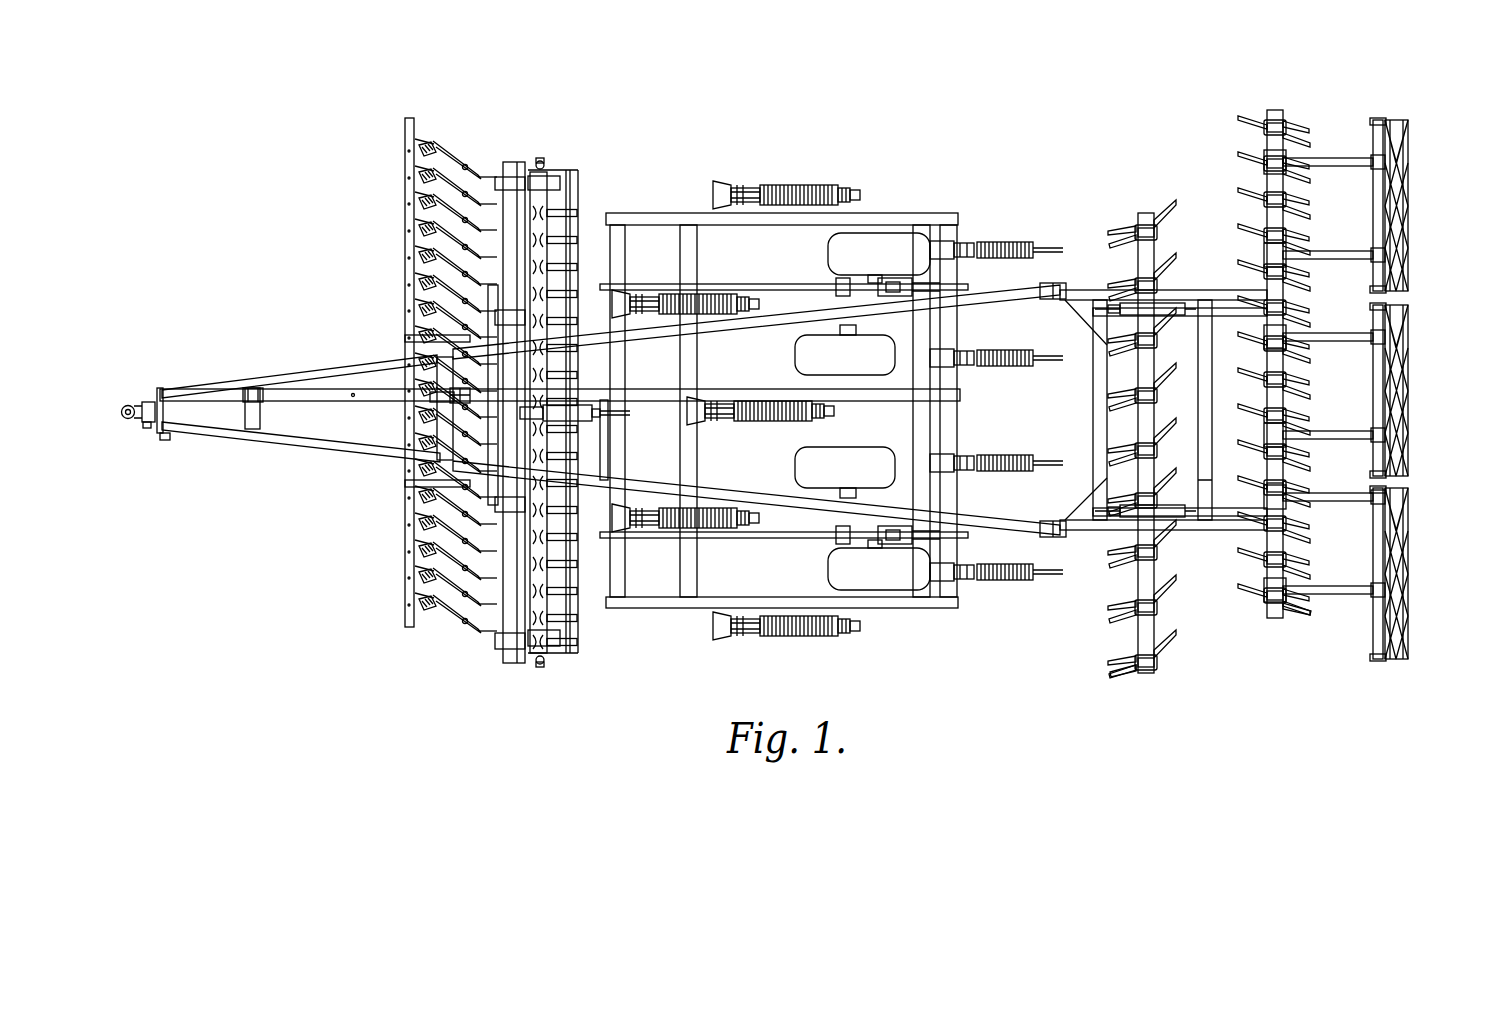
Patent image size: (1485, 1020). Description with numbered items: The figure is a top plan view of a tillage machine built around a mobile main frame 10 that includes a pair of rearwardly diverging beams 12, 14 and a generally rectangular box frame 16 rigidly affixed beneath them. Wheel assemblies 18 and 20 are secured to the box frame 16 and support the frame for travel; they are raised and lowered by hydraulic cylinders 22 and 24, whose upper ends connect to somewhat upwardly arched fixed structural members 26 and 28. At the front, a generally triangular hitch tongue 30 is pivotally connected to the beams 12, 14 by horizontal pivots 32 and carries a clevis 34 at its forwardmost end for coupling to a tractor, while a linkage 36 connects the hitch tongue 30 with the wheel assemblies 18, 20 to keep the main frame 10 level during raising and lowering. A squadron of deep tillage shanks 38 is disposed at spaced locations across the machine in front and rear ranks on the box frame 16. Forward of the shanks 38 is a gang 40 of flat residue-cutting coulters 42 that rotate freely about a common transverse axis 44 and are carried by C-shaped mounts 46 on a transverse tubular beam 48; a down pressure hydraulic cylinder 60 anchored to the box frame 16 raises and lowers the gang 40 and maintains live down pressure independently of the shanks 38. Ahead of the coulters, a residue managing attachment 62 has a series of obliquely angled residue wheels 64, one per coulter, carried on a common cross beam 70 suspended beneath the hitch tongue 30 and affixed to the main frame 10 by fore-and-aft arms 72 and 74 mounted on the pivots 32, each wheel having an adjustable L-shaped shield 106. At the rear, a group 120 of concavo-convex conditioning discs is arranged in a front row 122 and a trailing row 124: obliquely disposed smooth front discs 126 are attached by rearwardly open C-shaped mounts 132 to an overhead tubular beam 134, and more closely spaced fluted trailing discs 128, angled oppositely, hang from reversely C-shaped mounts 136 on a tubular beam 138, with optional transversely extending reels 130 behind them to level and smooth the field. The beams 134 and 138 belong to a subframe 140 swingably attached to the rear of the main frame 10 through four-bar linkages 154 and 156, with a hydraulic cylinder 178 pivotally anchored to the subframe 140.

The main frame 10 is at (790, 440).
The rearwardly diverging beam 12 is at (775, 490).
The rearwardly diverging beam 14 is at (775, 334).
The box frame 16 is at (900, 215).
The wheel assembly 18 is at (828, 568).
The wheel assembly 20 is at (828, 250).
The hydraulic cylinder 22 is at (905, 544).
The hydraulic cylinder 24 is at (905, 284).
The fixed structural member 26 is at (655, 538).
The fixed structural member 28 is at (665, 288).
The hitch tongue 30 is at (215, 432).
The horizontal pivot 32 is at (440, 372).
The clevis 34 is at (130, 420).
The linkage 36 is at (600, 391).
The deep tillage shank 38 is at (792, 188).
The coulter gang 40 is at (563, 464).
The coulter 42 is at (580, 656).
The common transverse axis 44 is at (548, 668).
The C-shaped mount 46 is at (540, 660).
The tubular beam 48 is at (512, 628).
The down pressure hydraulic cylinder 60 is at (592, 420).
The residue managing attachment 62 is at (399, 424).
The residue wheel 64 is at (445, 630).
The cross beam 70 is at (405, 550).
The fore-and-aft arm 72 is at (410, 487).
The fore-and-aft arm 74 is at (410, 336).
The L-shaped shield 106 is at (487, 632).
The group of conditioning discs 120 is at (1204, 432).
The front row of discs 122 is at (1134, 477).
The trailing row of discs 124 is at (1348, 408).
The front disc 126 is at (1165, 642).
The trailing disc 128 is at (1292, 614).
The reel 130 is at (1408, 210).
The C-shaped mount 132 is at (1110, 676).
The tubular beam 134 is at (1138, 640).
The reversely C-shaped mount 136 is at (1300, 558).
The tubular beam 138 is at (1283, 395).
The subframe 140 is at (1163, 394).
The four-bar linkage 154 is at (1083, 550).
The four-bar linkage 156 is at (1083, 280).
The hydraulic cylinder 178 is at (1170, 303).